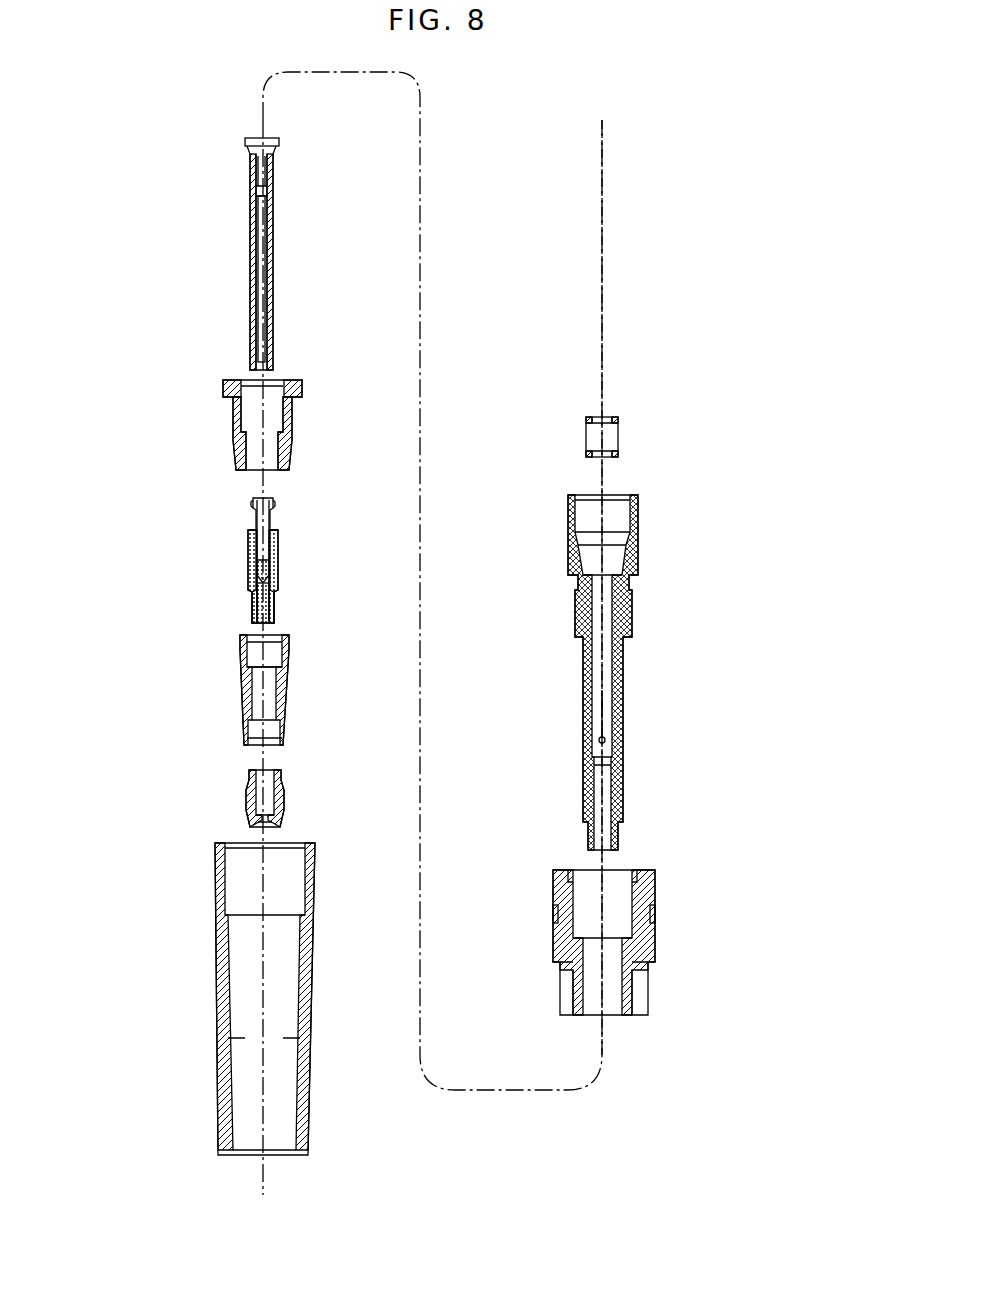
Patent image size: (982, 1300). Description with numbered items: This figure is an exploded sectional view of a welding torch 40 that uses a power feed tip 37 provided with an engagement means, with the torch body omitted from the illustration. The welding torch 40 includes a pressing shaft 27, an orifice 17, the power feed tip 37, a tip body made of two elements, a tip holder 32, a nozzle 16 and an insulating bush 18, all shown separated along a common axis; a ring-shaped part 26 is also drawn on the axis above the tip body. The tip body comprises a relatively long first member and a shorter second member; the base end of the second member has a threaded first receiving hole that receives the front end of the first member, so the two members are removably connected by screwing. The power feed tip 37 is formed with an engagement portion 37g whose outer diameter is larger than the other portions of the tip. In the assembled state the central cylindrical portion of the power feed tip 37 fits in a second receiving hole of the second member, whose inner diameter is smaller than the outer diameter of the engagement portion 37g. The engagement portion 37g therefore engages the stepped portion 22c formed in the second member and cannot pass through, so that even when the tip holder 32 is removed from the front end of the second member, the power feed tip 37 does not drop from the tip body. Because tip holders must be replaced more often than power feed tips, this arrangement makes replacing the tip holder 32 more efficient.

The welding torch 40 is at (645, 287).
The pressing shaft 27 is at (253, 282).
The orifice 17 is at (224, 388).
The power feed tip 37 is at (252, 548).
The engagement portion 37g is at (278, 530).
The stepped portion 22c is at (256, 680).
The tip holder 32 is at (246, 800).
The nozzle 16 is at (217, 950).
The ring 26 is at (620, 428).
The insulating bush 18 is at (655, 898).